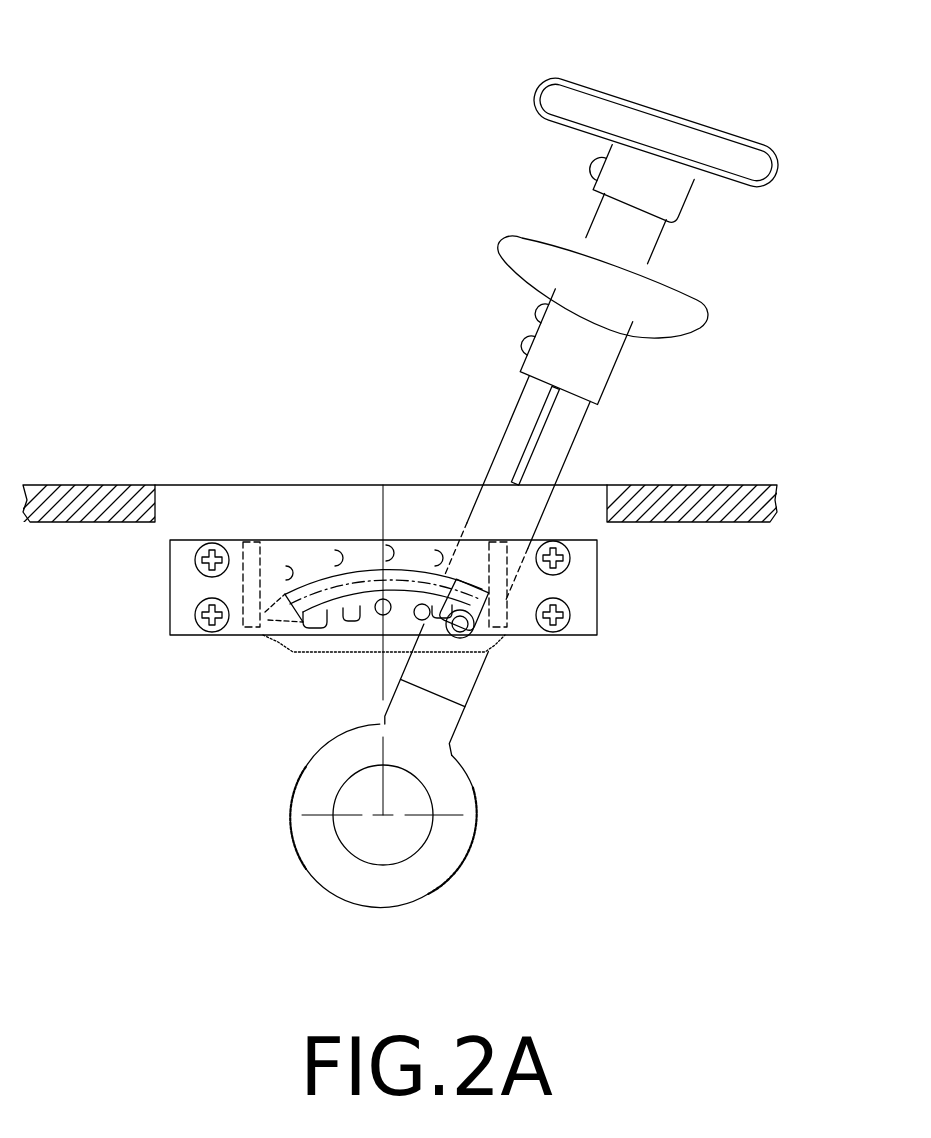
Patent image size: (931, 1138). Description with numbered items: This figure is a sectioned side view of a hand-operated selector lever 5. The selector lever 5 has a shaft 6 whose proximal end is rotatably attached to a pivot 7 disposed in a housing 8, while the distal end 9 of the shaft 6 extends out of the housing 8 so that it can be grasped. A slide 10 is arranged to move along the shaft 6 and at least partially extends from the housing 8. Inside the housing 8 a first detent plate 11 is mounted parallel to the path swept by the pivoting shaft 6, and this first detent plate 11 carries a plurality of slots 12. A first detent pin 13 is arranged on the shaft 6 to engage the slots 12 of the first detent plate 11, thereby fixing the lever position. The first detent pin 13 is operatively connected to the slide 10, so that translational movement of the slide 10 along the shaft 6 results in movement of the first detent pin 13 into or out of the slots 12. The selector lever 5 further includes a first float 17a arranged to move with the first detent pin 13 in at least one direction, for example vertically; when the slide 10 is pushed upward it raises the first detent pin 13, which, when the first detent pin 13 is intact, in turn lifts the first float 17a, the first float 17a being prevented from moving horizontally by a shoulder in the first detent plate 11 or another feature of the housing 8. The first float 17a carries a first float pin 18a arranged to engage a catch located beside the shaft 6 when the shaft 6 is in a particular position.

The selector lever 5 is at (410, 459).
The shaft 6 is at (558, 478).
The pivot 7 is at (368, 825).
The housing 8 is at (98, 503).
The distal end 9 is at (712, 115).
The slide 10 is at (620, 355).
The first detent plate 11 is at (183, 587).
The slots 12 is at (301, 628).
The first detent pin 13 is at (468, 627).
The first float 17a is at (258, 573).
The first float pin 18a is at (382, 552).